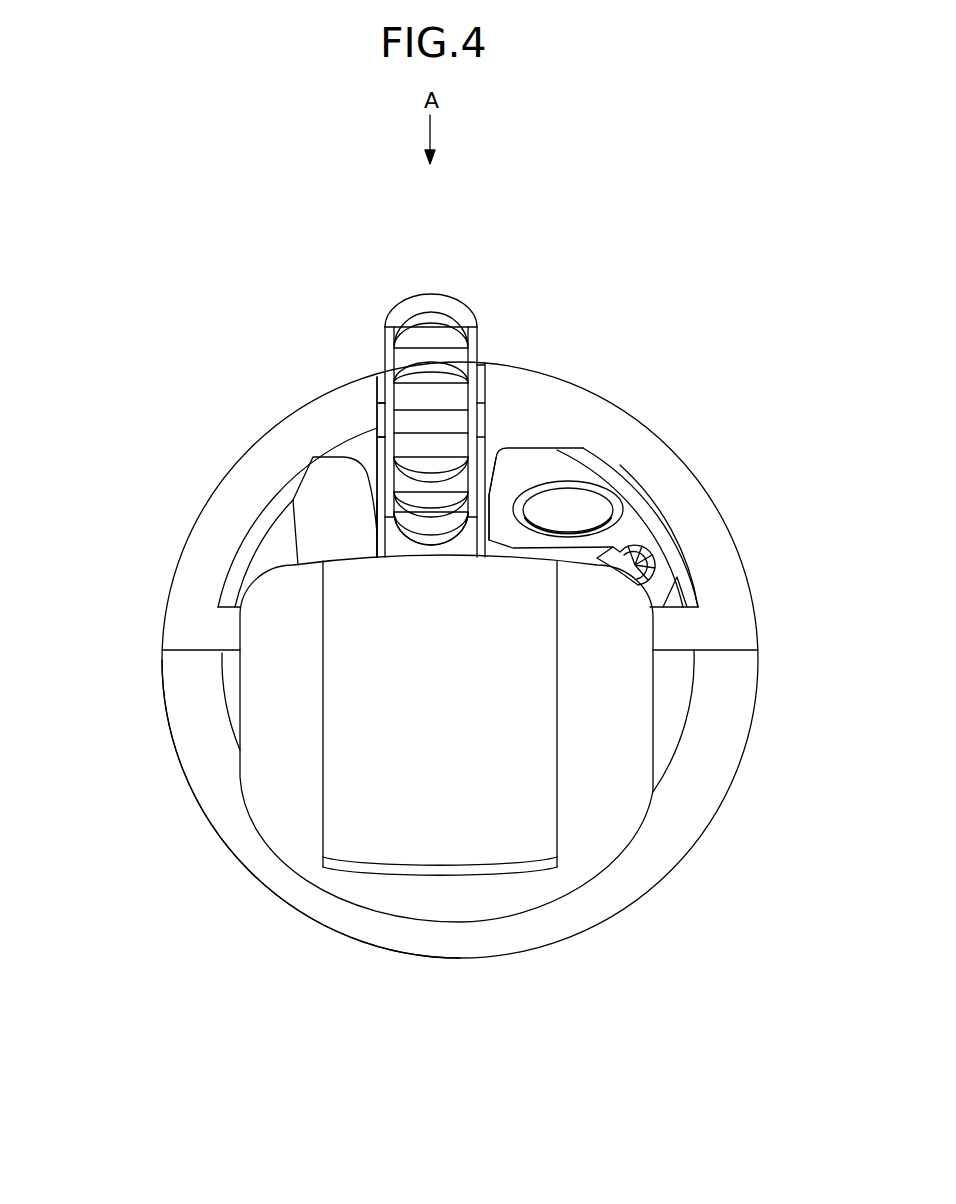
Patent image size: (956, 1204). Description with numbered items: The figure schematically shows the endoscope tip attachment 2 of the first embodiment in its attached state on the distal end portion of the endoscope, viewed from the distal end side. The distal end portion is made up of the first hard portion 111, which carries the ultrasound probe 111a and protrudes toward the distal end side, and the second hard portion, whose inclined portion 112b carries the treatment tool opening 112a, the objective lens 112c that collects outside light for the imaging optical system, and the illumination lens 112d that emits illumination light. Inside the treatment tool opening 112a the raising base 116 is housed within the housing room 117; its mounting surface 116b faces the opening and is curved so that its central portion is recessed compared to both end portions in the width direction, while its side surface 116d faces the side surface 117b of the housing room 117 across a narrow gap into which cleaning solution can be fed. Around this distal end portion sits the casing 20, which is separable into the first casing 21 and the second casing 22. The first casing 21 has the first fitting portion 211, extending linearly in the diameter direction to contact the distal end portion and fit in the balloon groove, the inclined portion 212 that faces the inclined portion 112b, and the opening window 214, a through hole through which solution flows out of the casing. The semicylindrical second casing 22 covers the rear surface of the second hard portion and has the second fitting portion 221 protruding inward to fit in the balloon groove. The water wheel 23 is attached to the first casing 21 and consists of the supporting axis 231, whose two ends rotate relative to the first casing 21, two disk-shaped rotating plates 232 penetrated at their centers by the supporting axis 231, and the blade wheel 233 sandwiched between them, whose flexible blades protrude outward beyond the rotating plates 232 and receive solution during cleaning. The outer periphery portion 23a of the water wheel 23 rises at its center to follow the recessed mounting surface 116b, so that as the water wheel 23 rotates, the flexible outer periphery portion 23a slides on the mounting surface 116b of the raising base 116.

The attachment 2 is at (714, 328).
The casing 20 is at (82, 613).
The first casing 21 is at (160, 618).
The second casing 22 is at (160, 690).
The water wheel 23 is at (429, 275).
The outer periphery portion 23a is at (455, 322).
The first hard portion 111 is at (660, 720).
The ultrasound probe 111a is at (440, 833).
The treatment tool opening 112a is at (380, 533).
The inclined portion 112b is at (320, 538).
The objective lens 112c is at (578, 482).
The illumination lens 112d is at (634, 546).
The raising base 116 is at (445, 550).
The mounting surface 116b is at (405, 535).
The side surface 116d is at (375, 518).
The housing room 117 is at (496, 505).
The side surface 117b is at (575, 500).
The first fitting portion 211 is at (673, 628).
The inclined portion 212 is at (657, 460).
The opening window 214 is at (277, 490).
The second fitting portion 221 is at (247, 822).
The supporting axis 231 is at (377, 423).
The rotating plates 232 is at (482, 343).
The blade wheel 233 is at (417, 337).